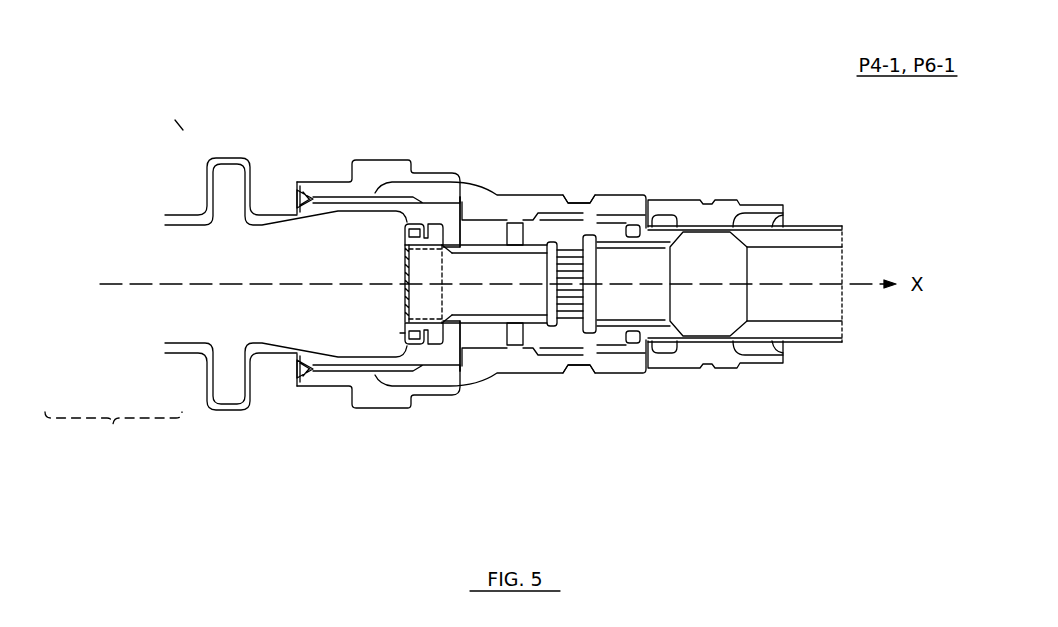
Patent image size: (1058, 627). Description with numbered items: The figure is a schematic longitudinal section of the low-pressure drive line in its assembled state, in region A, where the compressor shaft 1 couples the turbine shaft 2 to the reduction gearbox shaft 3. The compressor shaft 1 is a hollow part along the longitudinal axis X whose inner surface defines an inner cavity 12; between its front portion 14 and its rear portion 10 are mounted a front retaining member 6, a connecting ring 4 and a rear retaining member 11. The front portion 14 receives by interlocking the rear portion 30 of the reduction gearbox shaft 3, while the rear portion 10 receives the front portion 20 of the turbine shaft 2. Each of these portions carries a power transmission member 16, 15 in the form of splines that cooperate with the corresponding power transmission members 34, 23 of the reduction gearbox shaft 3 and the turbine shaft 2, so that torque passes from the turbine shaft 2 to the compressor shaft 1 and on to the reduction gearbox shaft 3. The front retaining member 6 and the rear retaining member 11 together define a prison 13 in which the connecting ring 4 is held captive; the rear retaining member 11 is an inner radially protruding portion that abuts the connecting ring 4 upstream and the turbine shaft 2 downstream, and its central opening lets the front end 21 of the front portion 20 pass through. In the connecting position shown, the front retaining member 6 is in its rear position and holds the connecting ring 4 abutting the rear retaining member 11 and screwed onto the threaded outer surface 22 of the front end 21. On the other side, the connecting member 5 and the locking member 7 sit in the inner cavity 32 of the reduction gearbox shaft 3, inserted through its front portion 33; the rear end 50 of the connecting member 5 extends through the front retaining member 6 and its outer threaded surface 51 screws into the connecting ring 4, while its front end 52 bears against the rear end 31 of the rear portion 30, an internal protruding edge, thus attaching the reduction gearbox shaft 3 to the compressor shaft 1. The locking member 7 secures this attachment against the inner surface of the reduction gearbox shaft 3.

The connection region A is at (183, 130).
The compressor shaft 1 is at (661, 158).
The turbine shaft 2 is at (713, 413).
The reduction gearbox shaft 3 is at (208, 422).
The connecting ring 4 is at (560, 344).
The connecting member 5 is at (385, 275).
The front retaining member 6 is at (505, 347).
The locking member 7 is at (398, 333).
The rear portion 10 is at (657, 188).
The rear retaining member 11 is at (647, 223).
The inner cavity 12 is at (487, 228).
The prison 13 is at (548, 223).
The front portion 14 is at (295, 153).
The power transmission member 15 is at (783, 215).
The power transmission member 16 is at (407, 199).
The front portion 20 is at (597, 377).
The front end 21 is at (614, 295).
The threaded outer surface 22 is at (627, 327).
The power transmission member 23 is at (783, 350).
The rear portion 30 is at (458, 412).
The rear end 31 is at (452, 355).
The inner cavity 32 is at (165, 294).
The front portion 33 is at (113, 434).
The power transmission member 34 is at (327, 370).
The rear end 50 is at (507, 295).
The outer threaded surface 51 is at (404, 305).
The front end 52 is at (404, 250).